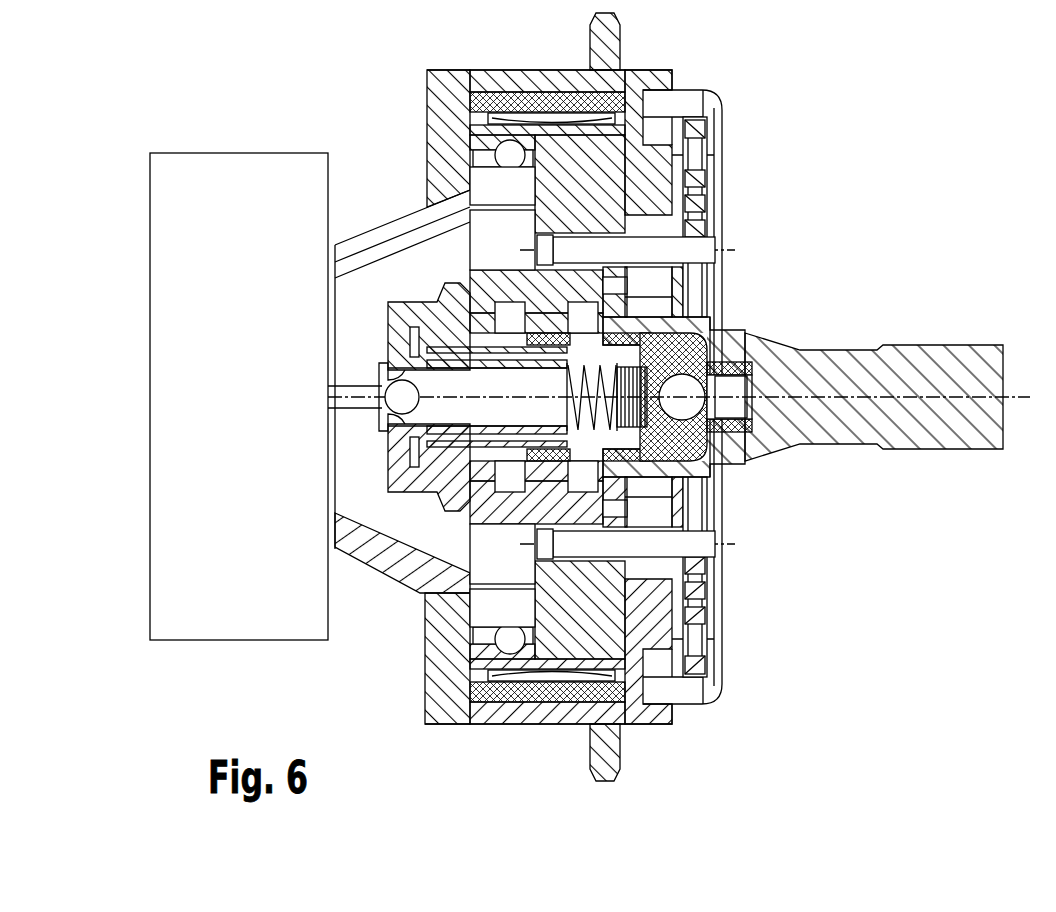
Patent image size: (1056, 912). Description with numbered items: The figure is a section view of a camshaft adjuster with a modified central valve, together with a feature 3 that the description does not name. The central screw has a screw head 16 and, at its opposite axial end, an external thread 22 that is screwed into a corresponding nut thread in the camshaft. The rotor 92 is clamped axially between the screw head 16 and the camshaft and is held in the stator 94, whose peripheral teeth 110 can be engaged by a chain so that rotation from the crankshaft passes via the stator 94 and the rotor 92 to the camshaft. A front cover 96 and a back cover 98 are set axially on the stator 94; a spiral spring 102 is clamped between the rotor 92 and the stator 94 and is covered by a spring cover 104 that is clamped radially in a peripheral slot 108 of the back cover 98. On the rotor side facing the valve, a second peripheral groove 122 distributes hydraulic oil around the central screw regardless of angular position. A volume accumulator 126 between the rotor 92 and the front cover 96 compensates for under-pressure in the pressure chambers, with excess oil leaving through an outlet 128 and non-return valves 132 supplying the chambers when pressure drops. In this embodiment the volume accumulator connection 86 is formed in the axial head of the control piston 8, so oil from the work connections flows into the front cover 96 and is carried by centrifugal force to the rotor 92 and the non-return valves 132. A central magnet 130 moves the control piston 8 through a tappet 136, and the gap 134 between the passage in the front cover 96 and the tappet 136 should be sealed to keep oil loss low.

The longitudinal axis 3 is at (1007, 392).
The control piston 8 is at (400, 440).
The screw head 16 is at (403, 300).
The external thread 22 is at (940, 345).
The volume accumulator connection 86 is at (368, 430).
The rotor 92 is at (617, 637).
The stator 94 is at (552, 720).
The front cover 96 is at (447, 105).
The back cover 98 is at (705, 210).
The spiral spring 102 is at (700, 190).
The spring cover 104 is at (722, 115).
The peripheral slot 108 is at (665, 103).
The teeth 110 is at (598, 17).
The second peripheral groove 122 is at (515, 300).
The volume accumulator 126 is at (433, 270).
The outlet 128 is at (660, 283).
The central magnet 130 is at (245, 165).
The non-return valves 132 is at (502, 112).
The gap 134 is at (330, 330).
The tappet 136 is at (330, 398).